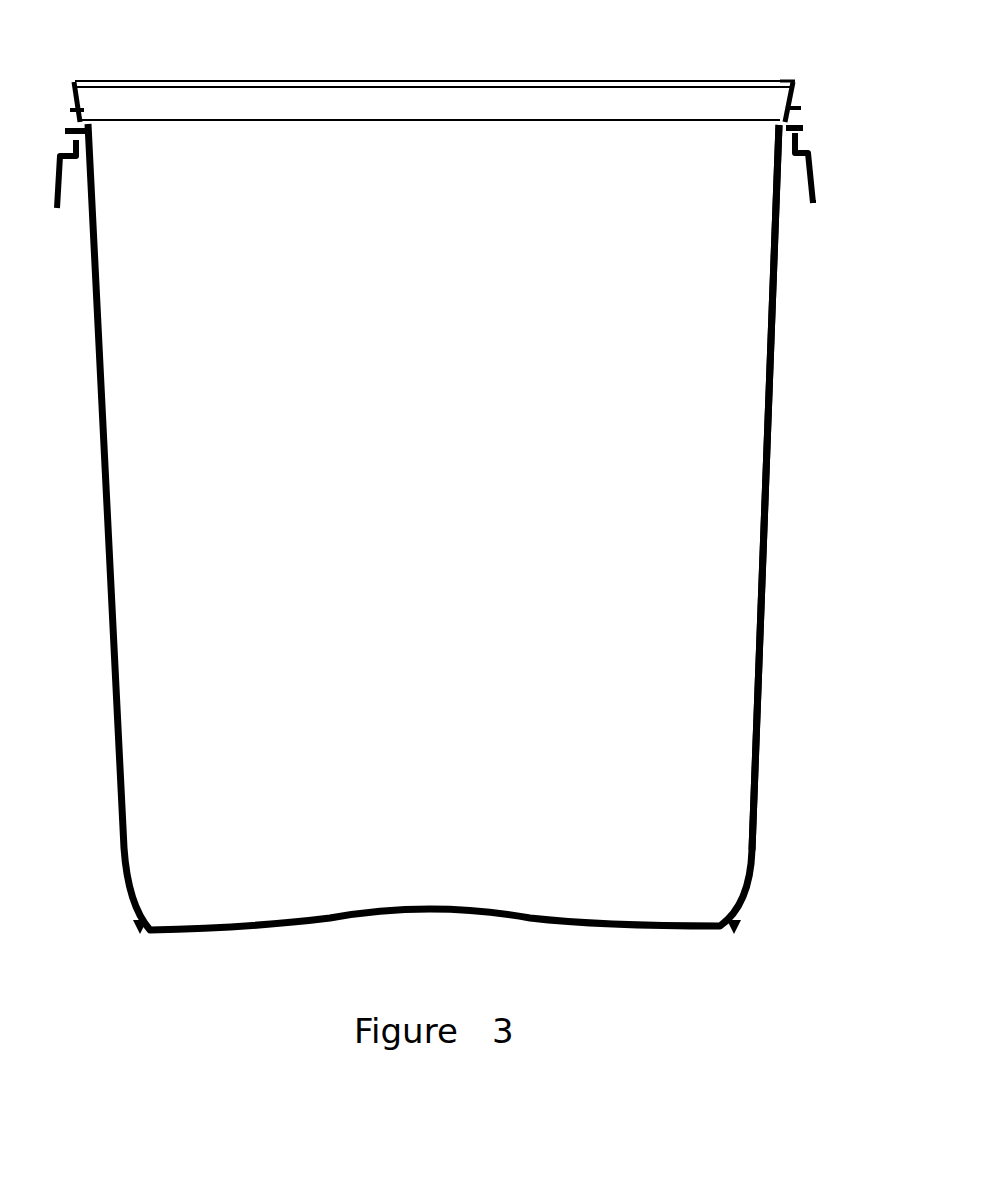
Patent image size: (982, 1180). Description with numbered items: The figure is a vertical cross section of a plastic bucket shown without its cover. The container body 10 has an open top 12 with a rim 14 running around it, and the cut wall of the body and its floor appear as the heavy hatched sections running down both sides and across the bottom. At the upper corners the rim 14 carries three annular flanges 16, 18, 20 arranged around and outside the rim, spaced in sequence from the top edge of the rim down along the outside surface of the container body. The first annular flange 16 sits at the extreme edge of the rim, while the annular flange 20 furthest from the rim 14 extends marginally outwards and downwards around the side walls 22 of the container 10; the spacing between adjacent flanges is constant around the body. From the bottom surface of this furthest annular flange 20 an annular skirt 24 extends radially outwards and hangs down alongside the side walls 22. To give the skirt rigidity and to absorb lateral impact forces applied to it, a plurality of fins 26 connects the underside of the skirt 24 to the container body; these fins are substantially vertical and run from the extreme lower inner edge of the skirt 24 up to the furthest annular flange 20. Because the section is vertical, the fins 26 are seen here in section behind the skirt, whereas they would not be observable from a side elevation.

The container body 10 is at (473, 529).
The open top 12 is at (478, 65).
The rim 14 is at (793, 80).
The first annular flange 16 is at (800, 86).
The annular flange 18 is at (802, 107).
The annular flange 20 is at (803, 130).
The side walls 22 is at (778, 299).
The annular skirt 24 is at (815, 168).
The fins 26 is at (72, 185).